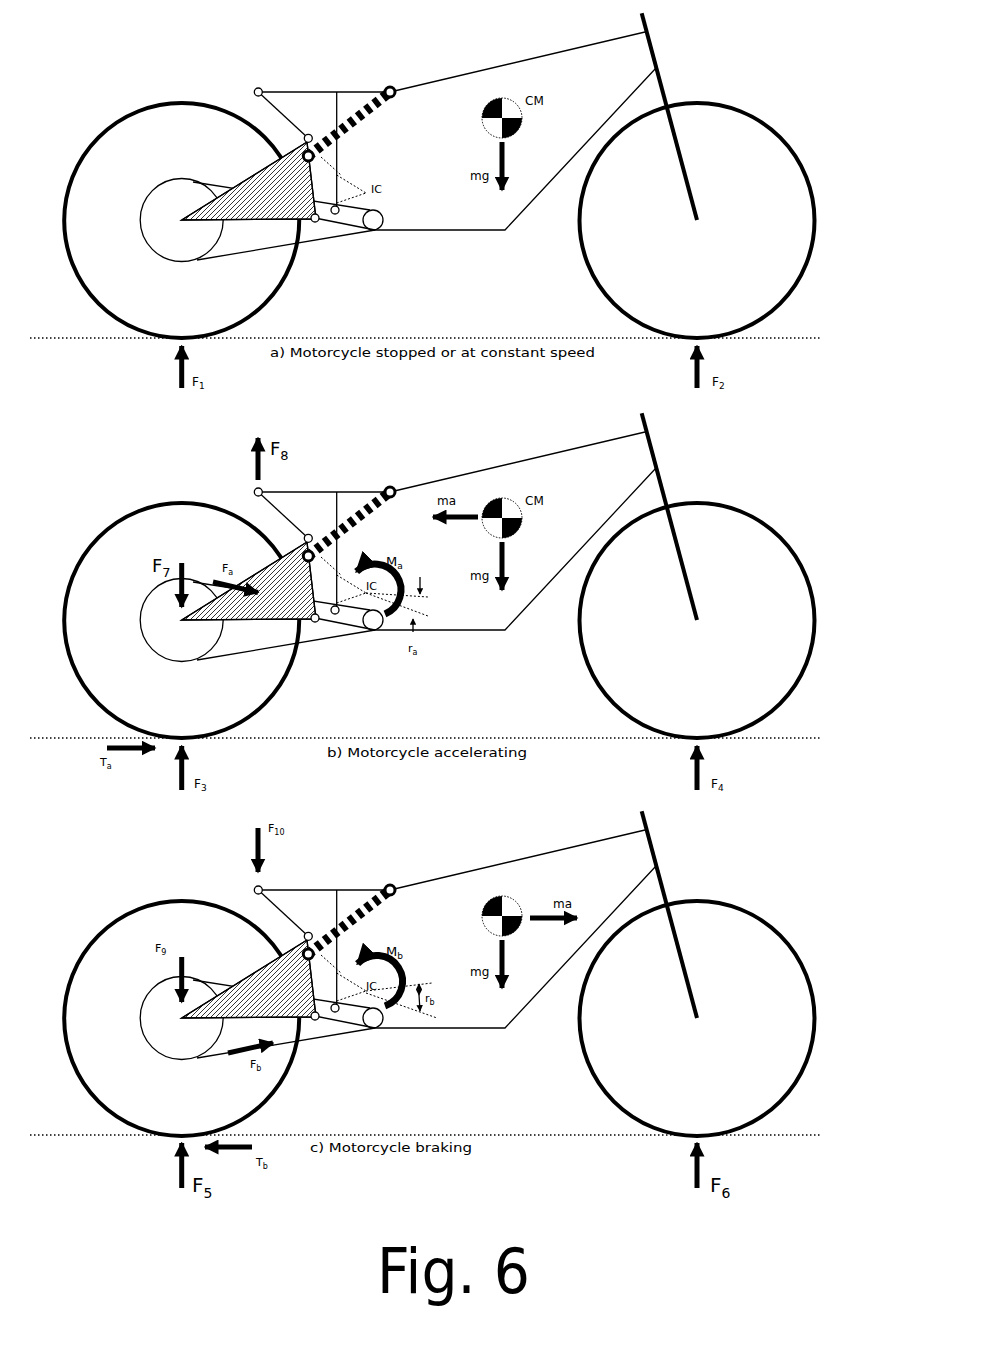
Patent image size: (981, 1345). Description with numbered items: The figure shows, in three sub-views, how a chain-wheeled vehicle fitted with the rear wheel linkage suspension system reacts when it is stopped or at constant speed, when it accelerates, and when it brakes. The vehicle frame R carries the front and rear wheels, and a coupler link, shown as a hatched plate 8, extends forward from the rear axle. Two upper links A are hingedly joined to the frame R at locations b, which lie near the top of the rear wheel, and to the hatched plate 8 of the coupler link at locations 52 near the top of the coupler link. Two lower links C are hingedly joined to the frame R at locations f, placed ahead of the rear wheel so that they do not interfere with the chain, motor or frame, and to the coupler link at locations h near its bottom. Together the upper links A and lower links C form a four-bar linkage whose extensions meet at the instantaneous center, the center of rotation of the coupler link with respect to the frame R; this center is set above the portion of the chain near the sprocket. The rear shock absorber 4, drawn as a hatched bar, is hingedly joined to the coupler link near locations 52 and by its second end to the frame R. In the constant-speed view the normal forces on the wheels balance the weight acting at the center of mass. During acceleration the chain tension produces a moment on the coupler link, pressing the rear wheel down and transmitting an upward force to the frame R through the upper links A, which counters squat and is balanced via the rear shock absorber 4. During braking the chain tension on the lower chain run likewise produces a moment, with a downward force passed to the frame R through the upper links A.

The rear shock absorber 4 is at (360, 97).
The swingarm plate 8 is at (249, 181).
The locations 52 is at (312, 126).
The frame R is at (302, 89).
The upper links A is at (283, 115).
The lower links C is at (322, 222).
The locations b is at (251, 86).
The locations f is at (332, 199).
The locations h is at (309, 228).